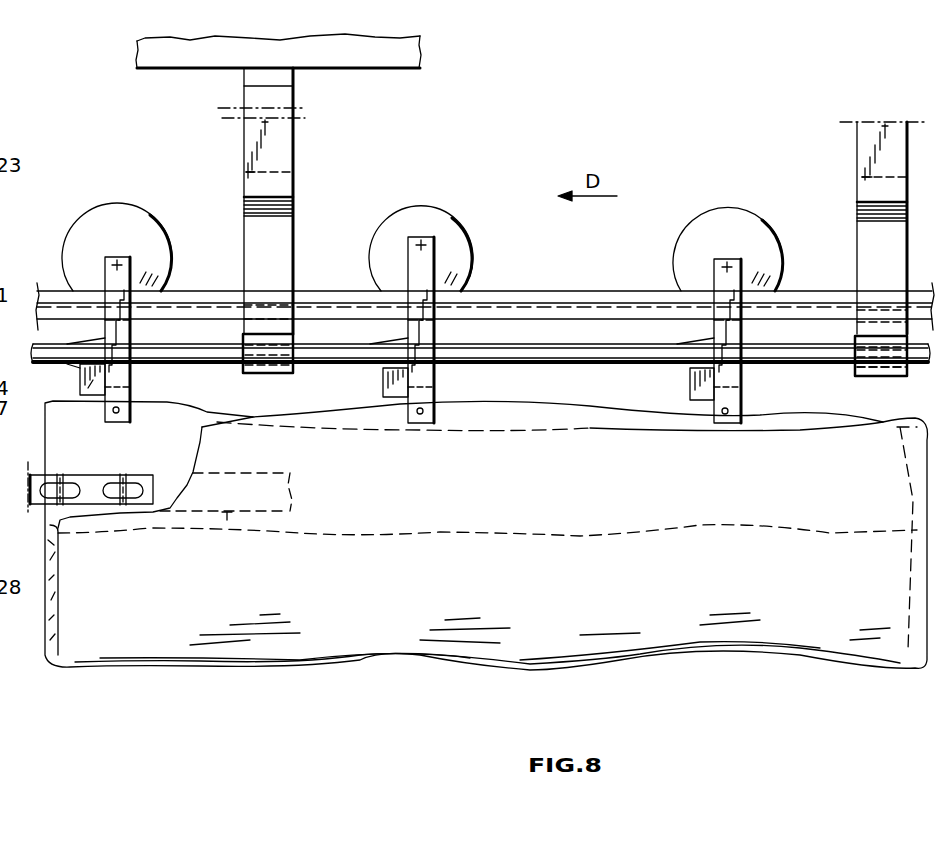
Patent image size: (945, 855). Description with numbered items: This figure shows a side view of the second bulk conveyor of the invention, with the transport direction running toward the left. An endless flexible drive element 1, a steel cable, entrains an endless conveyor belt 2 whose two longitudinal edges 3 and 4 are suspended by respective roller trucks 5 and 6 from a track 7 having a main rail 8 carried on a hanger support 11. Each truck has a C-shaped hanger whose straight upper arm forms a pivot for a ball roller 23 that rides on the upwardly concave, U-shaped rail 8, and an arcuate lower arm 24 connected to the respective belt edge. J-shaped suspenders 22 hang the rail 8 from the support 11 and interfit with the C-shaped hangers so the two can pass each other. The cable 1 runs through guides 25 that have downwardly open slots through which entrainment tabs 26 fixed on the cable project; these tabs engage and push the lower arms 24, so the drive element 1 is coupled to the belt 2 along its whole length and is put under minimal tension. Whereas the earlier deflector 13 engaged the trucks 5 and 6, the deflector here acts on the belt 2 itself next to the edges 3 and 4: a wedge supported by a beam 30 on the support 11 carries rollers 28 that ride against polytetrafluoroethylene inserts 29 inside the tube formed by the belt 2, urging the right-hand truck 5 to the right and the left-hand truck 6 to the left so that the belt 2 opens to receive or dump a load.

The endless flexible drive element 1 is at (587, 353).
The conveyor belt 2 is at (345, 640).
The longitudinal edge 3 is at (688, 432).
The longitudinal edge 4 is at (637, 408).
The roller truck 5 is at (436, 375).
The roller truck 6 is at (745, 378).
The track 7 is at (27, 184).
The main rail 8 is at (571, 292).
The hanger support 11 is at (400, 58).
The deflector 13 is at (24, 494).
The J-shaped suspender 22 is at (276, 134).
The ball roller 23 is at (142, 232).
The arcuate lower arm 24 is at (130, 381).
The guide 25 is at (244, 374).
The entrainment tab 26 is at (95, 396).
The roller 28 is at (75, 492).
The polytetrafluoroethylene insert 29 is at (227, 522).
The beam 30 is at (0, 438).